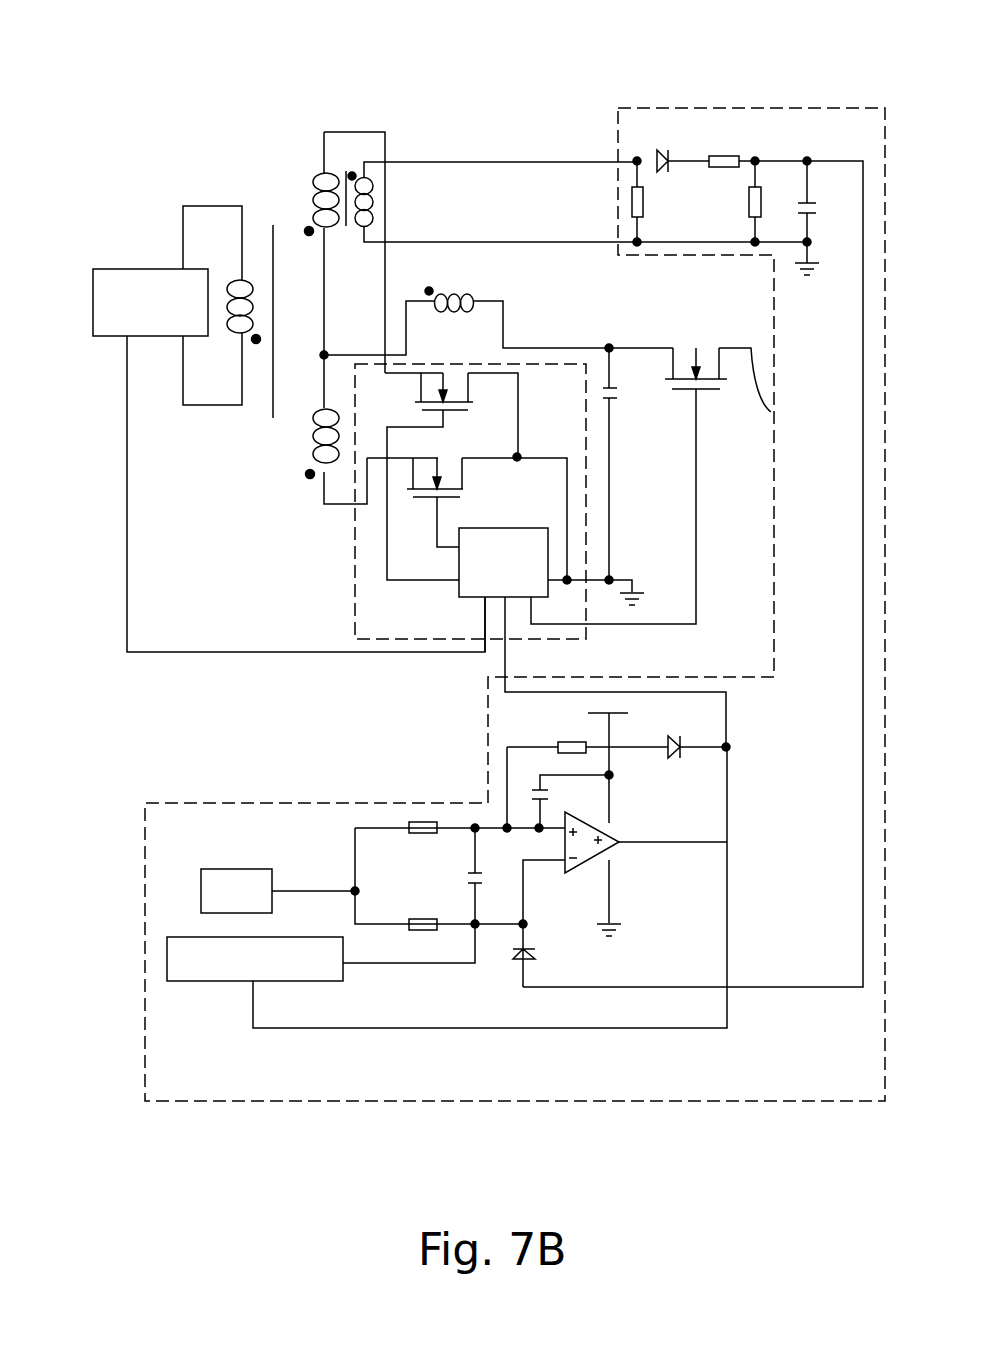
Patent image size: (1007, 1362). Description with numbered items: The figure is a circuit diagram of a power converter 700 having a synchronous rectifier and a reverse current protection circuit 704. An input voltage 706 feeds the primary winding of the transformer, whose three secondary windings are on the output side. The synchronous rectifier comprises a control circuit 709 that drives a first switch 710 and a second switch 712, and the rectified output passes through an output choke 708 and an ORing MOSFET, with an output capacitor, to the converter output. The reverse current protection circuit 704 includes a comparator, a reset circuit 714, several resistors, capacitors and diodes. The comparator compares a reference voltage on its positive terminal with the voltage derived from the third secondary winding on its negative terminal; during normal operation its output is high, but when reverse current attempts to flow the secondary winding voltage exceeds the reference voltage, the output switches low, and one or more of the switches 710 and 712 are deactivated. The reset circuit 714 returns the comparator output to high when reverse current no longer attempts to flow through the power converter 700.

The power converter 700 is at (253, 82).
The reverse current protection circuit 704 is at (187, 1101).
The input voltage 706 is at (129, 268).
The output choke 708 is at (452, 293).
The control circuit 709 is at (459, 600).
The switch 710 is at (462, 470).
The switch 712 is at (468, 380).
The reset circuit 714 is at (167, 957).